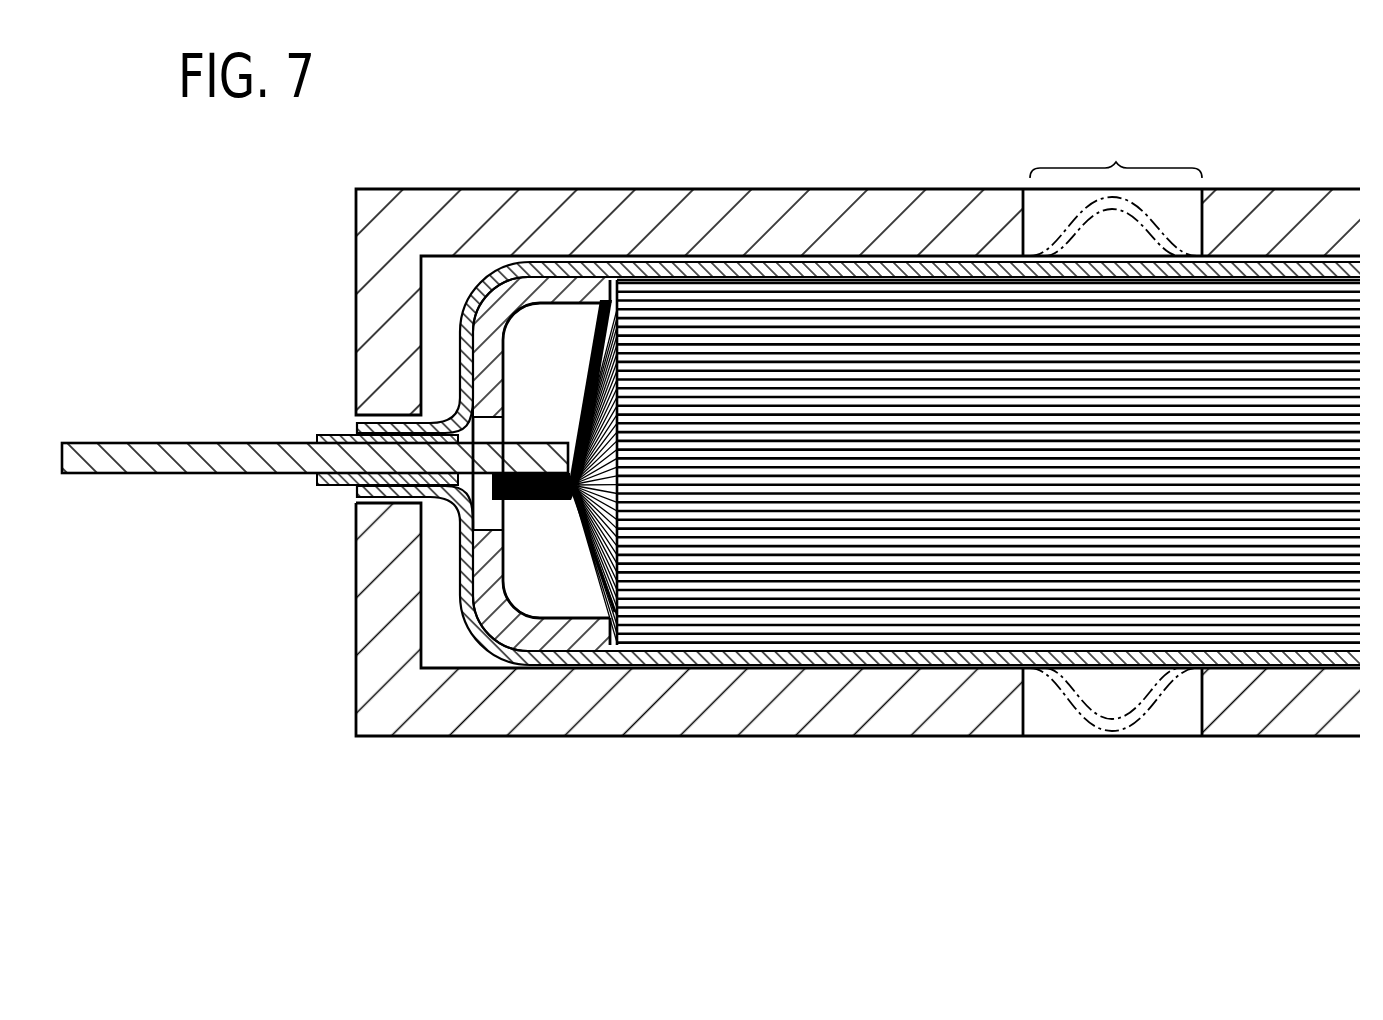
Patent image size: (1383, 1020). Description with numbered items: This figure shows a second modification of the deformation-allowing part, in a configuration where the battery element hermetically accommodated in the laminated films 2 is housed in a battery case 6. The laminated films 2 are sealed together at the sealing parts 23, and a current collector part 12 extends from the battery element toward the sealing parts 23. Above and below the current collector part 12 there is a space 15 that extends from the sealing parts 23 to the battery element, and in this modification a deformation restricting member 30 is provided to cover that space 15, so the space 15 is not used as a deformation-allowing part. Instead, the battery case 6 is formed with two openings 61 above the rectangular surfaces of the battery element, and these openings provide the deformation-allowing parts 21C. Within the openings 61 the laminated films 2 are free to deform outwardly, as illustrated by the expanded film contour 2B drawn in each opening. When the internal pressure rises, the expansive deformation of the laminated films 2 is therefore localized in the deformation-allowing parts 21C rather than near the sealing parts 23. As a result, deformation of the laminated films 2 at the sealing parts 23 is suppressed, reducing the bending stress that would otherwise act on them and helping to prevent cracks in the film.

The laminated films 2 is at (712, 270).
The expanded laminated film 2B is at (1180, 237).
The battery case 6 is at (620, 222).
The current collector part 12 is at (597, 587).
The space 15 is at (540, 552).
The deformation-allowing part 21C is at (1116, 151).
The sealing part 23 is at (358, 428).
The deformation restricting member 30 is at (553, 637).
The opening 61 is at (1033, 223).